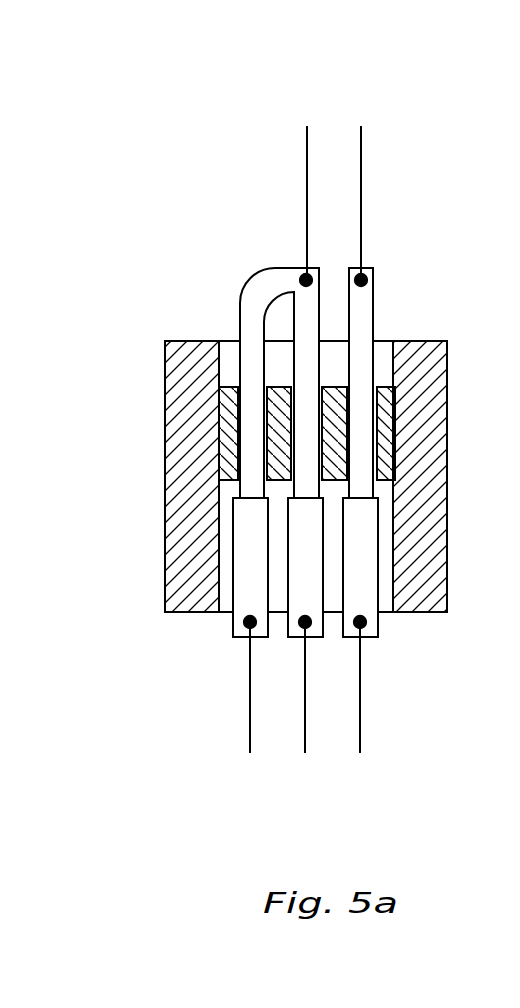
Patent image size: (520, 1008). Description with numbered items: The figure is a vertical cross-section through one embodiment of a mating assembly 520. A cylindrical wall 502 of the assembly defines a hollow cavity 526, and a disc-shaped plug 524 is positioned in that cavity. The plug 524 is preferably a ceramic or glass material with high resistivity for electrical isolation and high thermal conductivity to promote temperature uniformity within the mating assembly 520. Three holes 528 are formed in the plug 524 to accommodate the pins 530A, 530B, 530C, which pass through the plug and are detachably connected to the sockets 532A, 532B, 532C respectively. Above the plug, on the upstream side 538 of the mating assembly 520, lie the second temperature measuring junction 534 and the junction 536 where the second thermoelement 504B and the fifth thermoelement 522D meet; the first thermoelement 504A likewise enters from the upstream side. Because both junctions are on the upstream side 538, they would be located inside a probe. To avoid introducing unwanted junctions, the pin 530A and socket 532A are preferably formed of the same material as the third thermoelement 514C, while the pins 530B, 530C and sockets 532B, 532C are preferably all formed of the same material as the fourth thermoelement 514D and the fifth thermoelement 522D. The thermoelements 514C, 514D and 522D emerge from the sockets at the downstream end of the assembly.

The mating assembly 520 is at (107, 55).
The cylindrical wall 502 is at (427, 458).
The first thermoelement 504A is at (307, 155).
The second thermoelement 504B is at (362, 147).
The third thermoelement 514C is at (250, 707).
The fourth thermoelement 514D is at (305, 725).
The fifth thermoelement 522D is at (360, 713).
The disc-shaped plug 524 is at (236, 386).
The hollow cavity 526 is at (383, 354).
The holes 528 is at (231, 380).
The pin 530A is at (252, 402).
The pin 530B is at (305, 420).
The pin 530C is at (360, 444).
The socket 532A is at (247, 517).
The socket 532B is at (300, 550).
The socket 532C is at (362, 588).
The second temperature measuring junction 534 is at (303, 277).
The junction 536 is at (362, 277).
The upstream side 538 is at (394, 330).